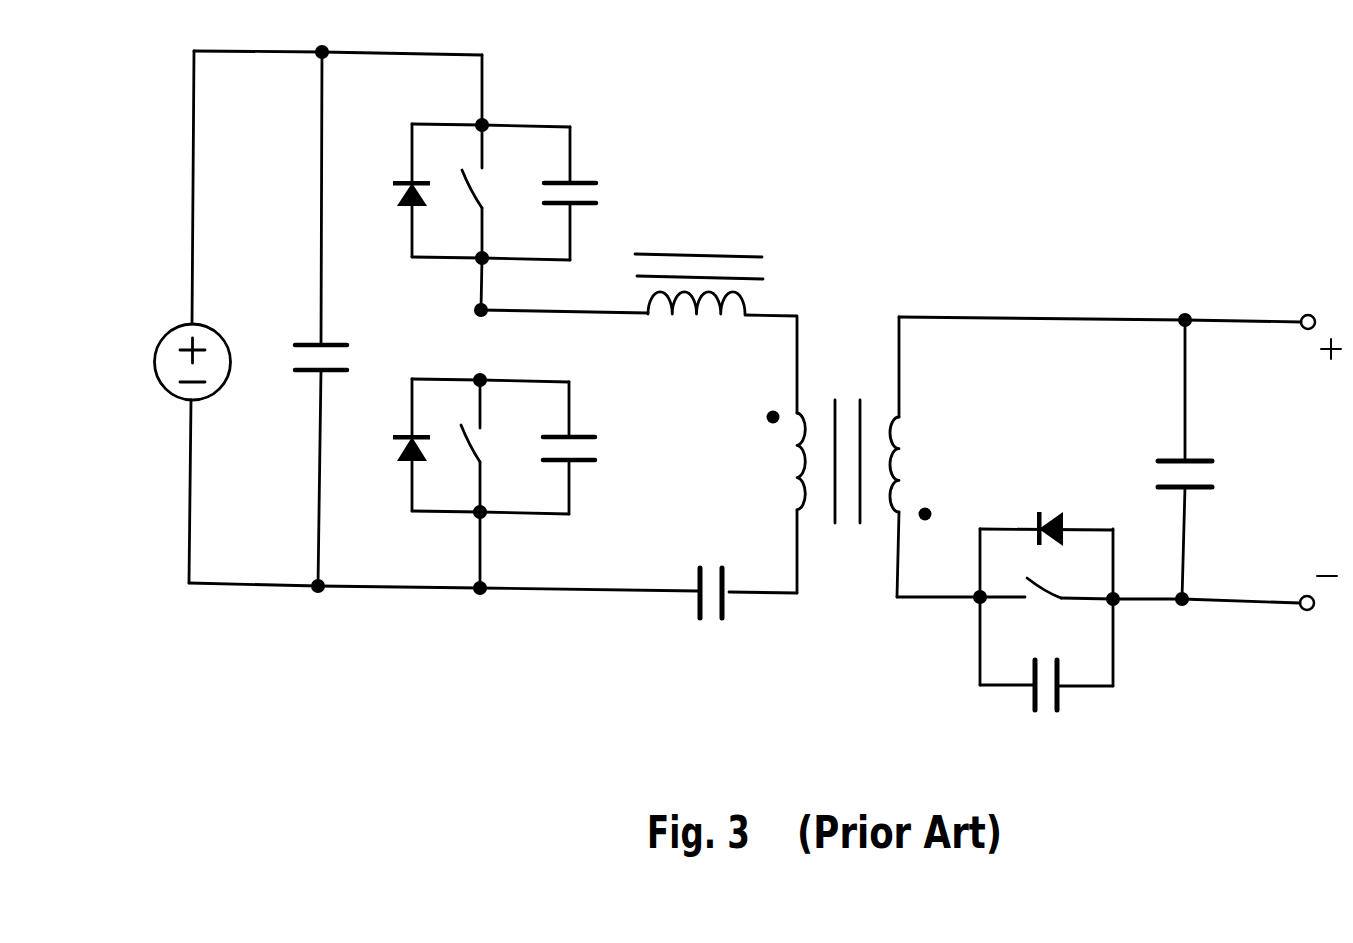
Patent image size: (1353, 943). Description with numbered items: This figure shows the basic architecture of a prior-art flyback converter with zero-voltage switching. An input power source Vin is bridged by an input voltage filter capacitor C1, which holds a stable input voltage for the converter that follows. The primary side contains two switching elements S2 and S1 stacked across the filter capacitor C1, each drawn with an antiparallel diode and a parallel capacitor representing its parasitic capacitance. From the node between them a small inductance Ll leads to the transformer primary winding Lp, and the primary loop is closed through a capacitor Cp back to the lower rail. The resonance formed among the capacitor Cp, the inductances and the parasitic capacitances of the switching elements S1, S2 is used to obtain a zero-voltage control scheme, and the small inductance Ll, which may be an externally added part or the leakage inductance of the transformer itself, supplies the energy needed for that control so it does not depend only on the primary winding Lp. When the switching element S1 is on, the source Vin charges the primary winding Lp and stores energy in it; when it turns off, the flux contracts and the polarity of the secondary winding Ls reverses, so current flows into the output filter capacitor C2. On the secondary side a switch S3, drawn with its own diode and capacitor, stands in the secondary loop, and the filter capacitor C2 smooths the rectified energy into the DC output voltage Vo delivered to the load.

The input power source Vin is at (158, 362).
The input voltage filter capacitor C1 is at (348, 319).
The switching element S2 is at (494, 224).
The switching element S1 is at (494, 483).
The small inductance Ll is at (699, 259).
The primary winding Lp is at (761, 460).
The secondary winding Ls is at (941, 469).
The capacitor Cp is at (717, 628).
The output voltage filter capacitor C2 is at (1150, 459).
The secondary-side switch with diode and capacitor S3 is at (1016, 611).
The DC output voltage Vo is at (1326, 462).